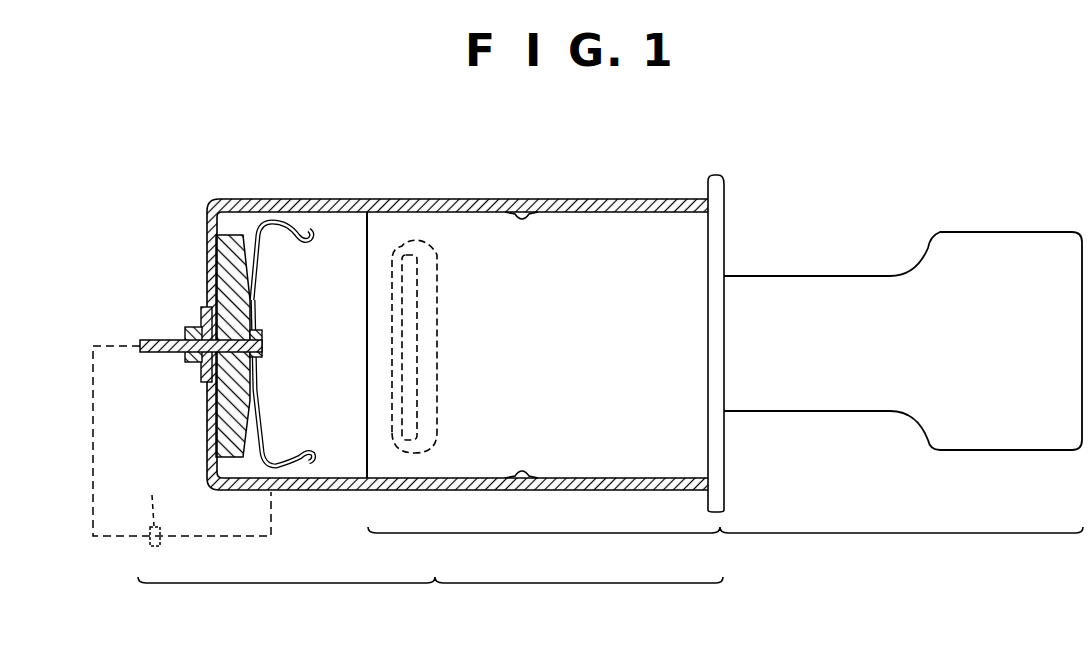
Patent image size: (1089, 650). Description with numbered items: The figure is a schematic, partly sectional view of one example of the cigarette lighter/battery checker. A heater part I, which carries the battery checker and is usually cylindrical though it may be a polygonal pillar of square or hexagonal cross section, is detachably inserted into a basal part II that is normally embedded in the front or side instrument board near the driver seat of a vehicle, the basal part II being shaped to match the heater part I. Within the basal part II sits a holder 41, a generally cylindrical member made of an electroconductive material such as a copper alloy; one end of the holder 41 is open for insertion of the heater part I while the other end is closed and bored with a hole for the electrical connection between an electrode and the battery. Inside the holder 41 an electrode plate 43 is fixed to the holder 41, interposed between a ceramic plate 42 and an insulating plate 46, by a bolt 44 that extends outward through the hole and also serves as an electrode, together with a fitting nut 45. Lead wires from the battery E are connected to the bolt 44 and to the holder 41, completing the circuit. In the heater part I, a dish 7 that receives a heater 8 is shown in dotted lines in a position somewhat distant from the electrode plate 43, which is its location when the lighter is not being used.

The holder 41 is at (292, 198).
The ceramic plate 42 is at (238, 413).
The electrode plate 43 is at (263, 265).
The bolt 44 is at (263, 343).
The fitting nut 45 is at (190, 364).
The insulating plate 46 is at (203, 314).
The dish 7 is at (432, 248).
The heater 8 is at (399, 247).
The battery E is at (182, 446).
The heater part I is at (725, 550).
The basal part II is at (430, 602).